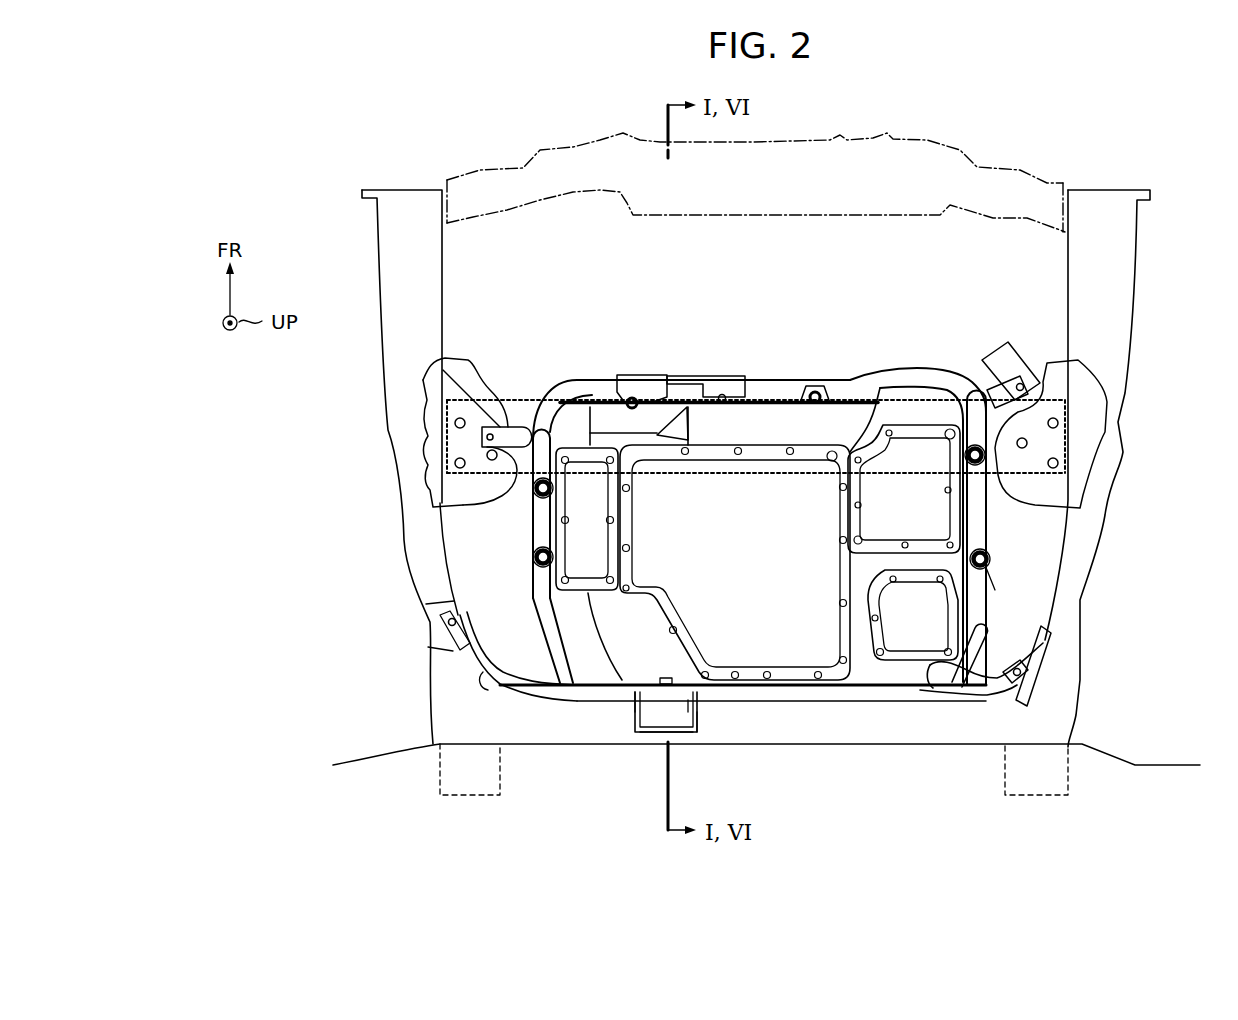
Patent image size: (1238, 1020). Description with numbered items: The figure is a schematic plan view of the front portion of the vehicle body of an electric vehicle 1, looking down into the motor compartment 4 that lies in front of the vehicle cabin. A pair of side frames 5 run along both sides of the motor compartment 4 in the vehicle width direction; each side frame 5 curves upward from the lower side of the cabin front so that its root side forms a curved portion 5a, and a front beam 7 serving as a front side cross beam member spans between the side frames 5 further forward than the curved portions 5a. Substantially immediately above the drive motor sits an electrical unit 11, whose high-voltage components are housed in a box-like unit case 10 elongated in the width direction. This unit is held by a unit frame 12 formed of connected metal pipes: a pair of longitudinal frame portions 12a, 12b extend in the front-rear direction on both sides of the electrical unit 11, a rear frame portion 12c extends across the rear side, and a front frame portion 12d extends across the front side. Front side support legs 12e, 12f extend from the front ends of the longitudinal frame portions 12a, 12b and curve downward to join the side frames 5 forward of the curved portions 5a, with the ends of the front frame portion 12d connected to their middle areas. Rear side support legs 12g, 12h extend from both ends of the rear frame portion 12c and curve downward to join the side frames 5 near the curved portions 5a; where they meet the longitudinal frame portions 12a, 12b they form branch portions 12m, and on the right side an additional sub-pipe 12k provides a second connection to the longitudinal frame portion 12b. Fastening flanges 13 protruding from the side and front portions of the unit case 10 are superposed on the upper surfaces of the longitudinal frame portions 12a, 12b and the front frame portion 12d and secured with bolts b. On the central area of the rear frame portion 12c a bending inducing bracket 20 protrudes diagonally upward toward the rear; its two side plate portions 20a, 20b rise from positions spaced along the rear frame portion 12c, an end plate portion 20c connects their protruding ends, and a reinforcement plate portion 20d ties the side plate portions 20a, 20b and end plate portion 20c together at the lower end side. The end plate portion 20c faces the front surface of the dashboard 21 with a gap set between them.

The electric vehicle 1 is at (1082, 157).
The motor compartment 4 is at (1085, 250).
The side frame 5 is at (405, 237).
The curved portion 5a is at (447, 672).
The front beam 7 is at (536, 425).
The unit case 10 is at (793, 420).
The electrical unit 11 is at (921, 378).
The unit frame 12 is at (998, 525).
The longitudinal frame portion 12a is at (537, 578).
The longitudinal frame portion 12b is at (988, 650).
The rear frame portion 12c is at (590, 694).
The front frame portion 12d is at (757, 380).
The front side support leg 12e is at (531, 428).
The front side support leg 12f is at (1060, 423).
The rear side support leg 12g is at (500, 688).
The rear side support leg 12h is at (1013, 705).
The sub-pipe 12k is at (955, 688).
The branch portion 12m is at (573, 688).
The fastening flange 13 is at (646, 396).
The bolt b is at (630, 396).
The bending inducing bracket 20 is at (689, 752).
The side plate portion 20a is at (635, 706).
The side plate portion 20b is at (697, 725).
The end plate portion 20c is at (650, 735).
The reinforcement plate portion 20d is at (690, 710).
The dashboard 21 is at (856, 737).